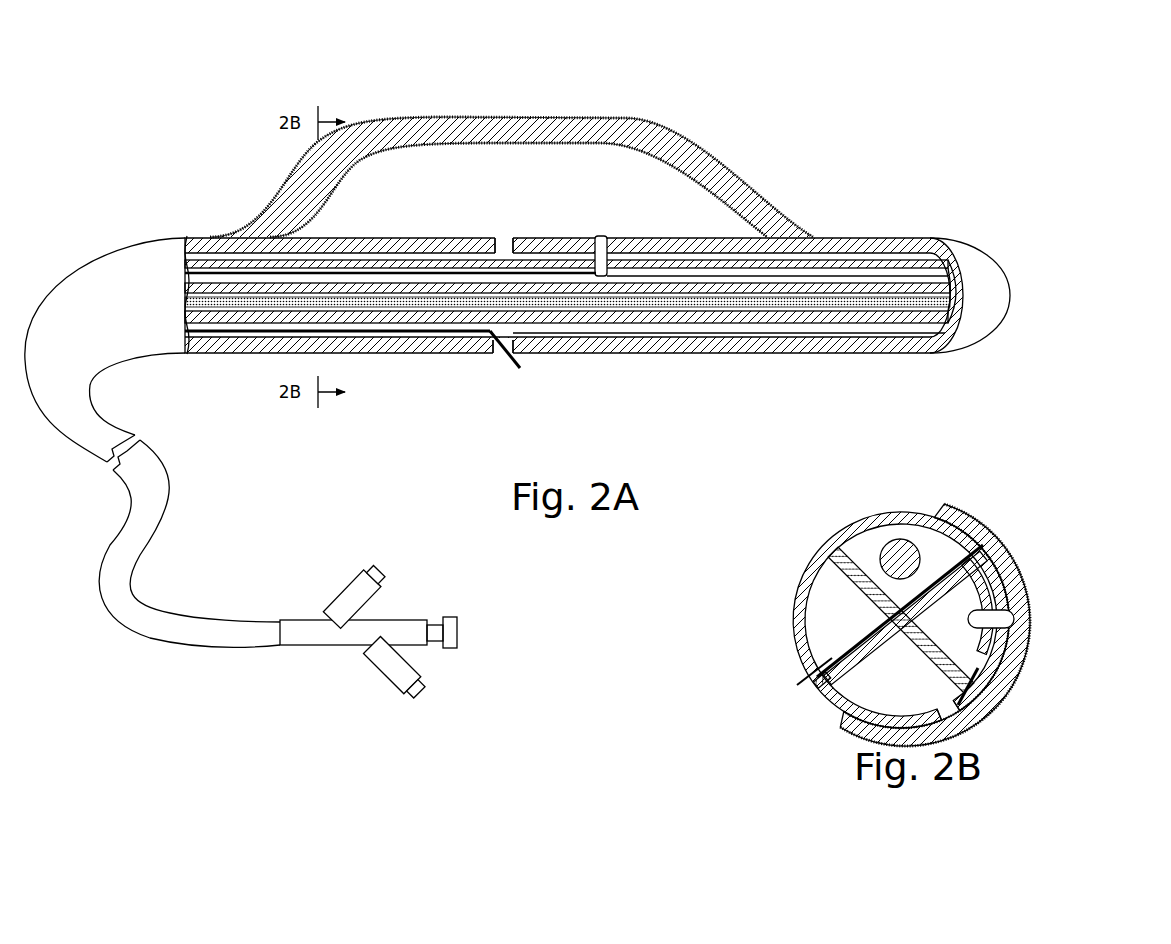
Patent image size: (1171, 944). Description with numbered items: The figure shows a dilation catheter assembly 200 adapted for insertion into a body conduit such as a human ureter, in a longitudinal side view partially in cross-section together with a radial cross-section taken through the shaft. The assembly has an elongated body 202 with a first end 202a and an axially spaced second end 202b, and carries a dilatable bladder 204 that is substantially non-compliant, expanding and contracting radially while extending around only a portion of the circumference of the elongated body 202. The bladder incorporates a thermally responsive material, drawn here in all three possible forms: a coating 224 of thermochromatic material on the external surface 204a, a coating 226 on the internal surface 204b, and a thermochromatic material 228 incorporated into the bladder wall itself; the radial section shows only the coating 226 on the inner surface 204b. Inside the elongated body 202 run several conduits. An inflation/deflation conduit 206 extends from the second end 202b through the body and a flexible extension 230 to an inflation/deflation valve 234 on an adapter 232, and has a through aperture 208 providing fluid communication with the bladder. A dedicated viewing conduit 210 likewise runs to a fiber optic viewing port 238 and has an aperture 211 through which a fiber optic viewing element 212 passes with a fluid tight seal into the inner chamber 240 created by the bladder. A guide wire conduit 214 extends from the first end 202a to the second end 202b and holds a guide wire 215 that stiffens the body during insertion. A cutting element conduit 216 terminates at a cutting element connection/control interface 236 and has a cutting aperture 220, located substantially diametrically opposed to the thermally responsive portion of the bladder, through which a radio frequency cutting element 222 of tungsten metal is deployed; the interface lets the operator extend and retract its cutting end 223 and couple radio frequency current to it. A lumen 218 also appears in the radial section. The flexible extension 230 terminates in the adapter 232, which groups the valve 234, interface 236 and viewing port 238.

In FIG. 2A, the dilation catheter assembly 200 is at (768, 66).
In FIG. 2A, the elongated body 202 is at (716, 358).
In FIG. 2A, the first end 202a is at (181, 234).
In FIG. 2A, the second end 202b is at (935, 234).
In FIG. 2A, the dilatable bladder 204 is at (742, 150).
In FIG. 2B, the dilatable bladder 204 is at (1036, 580).
In FIG. 2A, the external surface 204a is at (672, 135).
In FIG. 2B, the external surface 204a is at (1038, 642).
In FIG. 2A, the internal surface 204b is at (655, 148).
In FIG. 2B, the internal surface 204b is at (1038, 630).
In FIG. 2A, the inflation/deflation conduit 206 is at (867, 256).
In FIG. 2B, the inflation/deflation conduit 206 is at (868, 706).
In FIG. 2A, the through aperture 208 is at (507, 237).
In FIG. 2B, the through aperture 208 is at (948, 702).
In FIG. 2A, the dedicated viewing conduit 210 is at (917, 278).
In FIG. 2B, the dedicated viewing conduit 210 is at (992, 650).
In FIG. 2A, the aperture 211 is at (610, 275).
In FIG. 2B, the aperture 211 is at (978, 612).
In FIG. 2A, the fiber optic viewing element 212 is at (603, 233).
In FIG. 2B, the fiber optic viewing element 212 is at (985, 628).
In FIG. 2A, the guide wire conduit 214 is at (850, 312).
In FIG. 2B, the guide wire conduit 214 is at (858, 548).
In FIG. 2A, the guide wire 215 is at (770, 302).
In FIG. 2B, the guide wire 215 is at (912, 546).
In FIG. 2A, the cutting element conduit 216 is at (625, 333).
In FIG. 2B, the lumen 218 is at (828, 607).
In FIG. 2A, the cutting aperture 220 is at (521, 353).
In FIG. 2B, the cutting aperture 220 is at (797, 680).
In FIG. 2A, the radio frequency cutting element 222 is at (352, 336).
In FIG. 2B, the radio frequency cutting element 222 is at (824, 670).
In FIG. 2A, the cutting end 223 is at (495, 352).
In FIG. 2A, the coating 224 is at (465, 114).
In FIG. 2A, the coating 226 is at (500, 146).
In FIG. 2B, the coating 226 is at (1000, 575).
In FIG. 2A, the thermochromatic material 228 is at (550, 118).
In FIG. 2A, the flexible extension 230 is at (85, 455).
In FIG. 2A, the adapter 232 is at (300, 648).
In FIG. 2A, the inflation/deflation valve 234 is at (343, 598).
In FIG. 2A, the cutting element connection/control interface 236 is at (450, 618).
In FIG. 2A, the fiber optic viewing port 238 is at (378, 665).
In FIG. 2A, the inner chamber 240 is at (385, 193).
In FIG. 2B, the inner chamber 240 is at (992, 703).